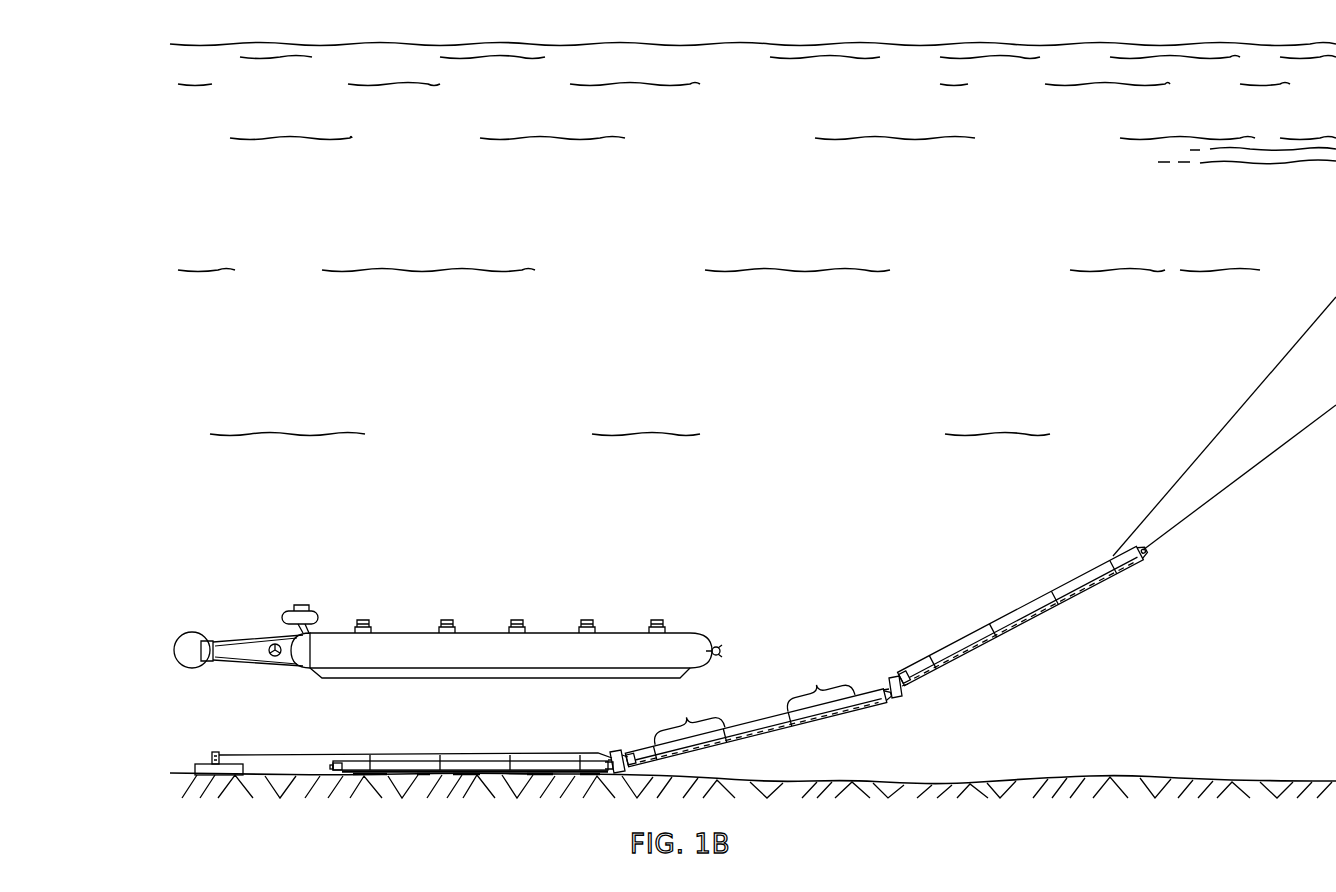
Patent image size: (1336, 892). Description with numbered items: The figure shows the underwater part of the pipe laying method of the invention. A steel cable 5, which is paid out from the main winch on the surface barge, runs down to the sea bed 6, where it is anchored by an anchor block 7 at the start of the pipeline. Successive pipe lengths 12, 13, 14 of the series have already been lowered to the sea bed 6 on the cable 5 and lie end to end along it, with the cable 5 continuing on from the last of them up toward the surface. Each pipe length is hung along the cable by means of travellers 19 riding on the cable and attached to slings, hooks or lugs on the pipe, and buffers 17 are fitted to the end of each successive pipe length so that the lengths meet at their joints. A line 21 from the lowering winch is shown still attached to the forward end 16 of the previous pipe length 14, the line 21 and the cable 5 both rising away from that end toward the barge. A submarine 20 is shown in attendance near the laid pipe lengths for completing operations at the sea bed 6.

The steel cable 5 is at (598, 753).
The sea bed 6 is at (1221, 779).
The anchor block 7 is at (228, 765).
The pipe length 12 is at (482, 762).
The pipe length 13 is at (805, 720).
The pipe length 14 is at (1028, 620).
The forward end 16 is at (1147, 552).
The buffer 17 is at (620, 752).
The traveller 19 is at (753, 705).
The submarine 20 is at (545, 640).
The line 21 is at (1280, 447).